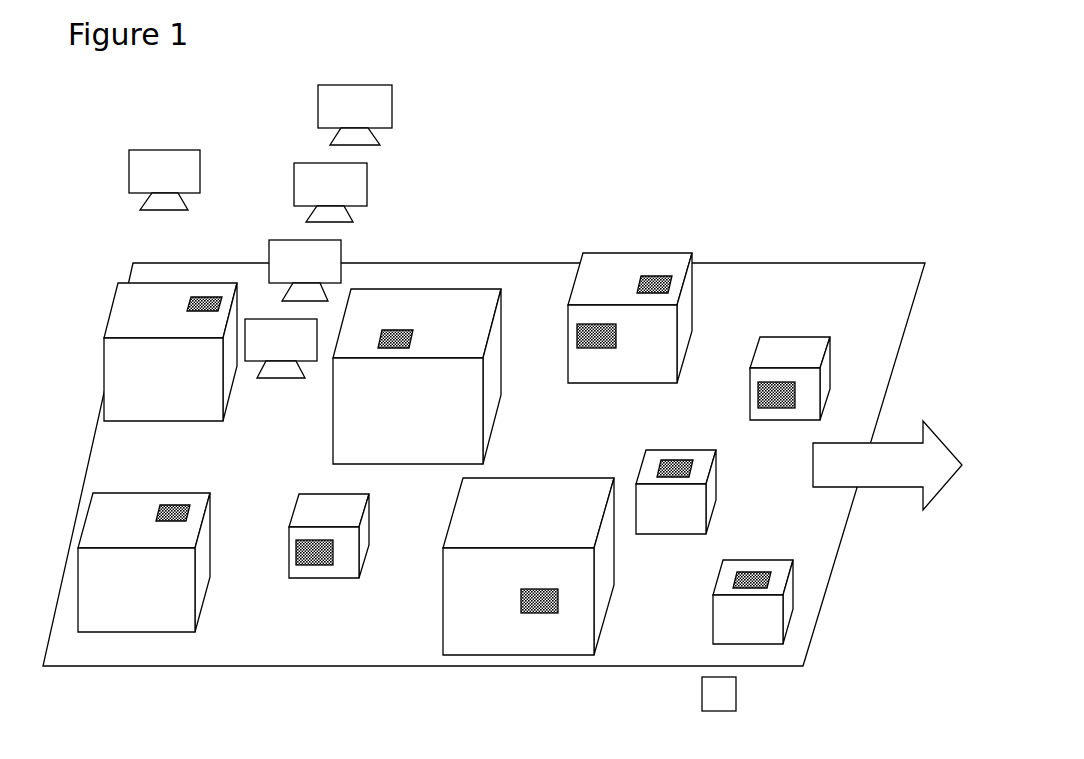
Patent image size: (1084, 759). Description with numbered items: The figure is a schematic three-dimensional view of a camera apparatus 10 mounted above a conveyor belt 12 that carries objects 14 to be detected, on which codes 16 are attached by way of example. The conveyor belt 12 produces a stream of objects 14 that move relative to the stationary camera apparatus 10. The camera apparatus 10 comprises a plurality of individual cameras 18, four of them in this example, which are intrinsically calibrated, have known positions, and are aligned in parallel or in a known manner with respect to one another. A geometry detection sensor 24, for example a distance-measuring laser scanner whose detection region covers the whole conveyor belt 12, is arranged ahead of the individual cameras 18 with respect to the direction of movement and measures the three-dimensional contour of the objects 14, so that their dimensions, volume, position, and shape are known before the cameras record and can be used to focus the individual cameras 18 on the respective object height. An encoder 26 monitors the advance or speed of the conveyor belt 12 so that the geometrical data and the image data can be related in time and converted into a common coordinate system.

The camera apparatus 10 is at (423, 85).
The conveyor belt 12 is at (813, 277).
The objects 14 is at (623, 265).
The codes 16 is at (780, 400).
The individual cameras 18 is at (276, 414).
The geometry detection sensor 24 is at (155, 174).
The encoder 26 is at (722, 699).